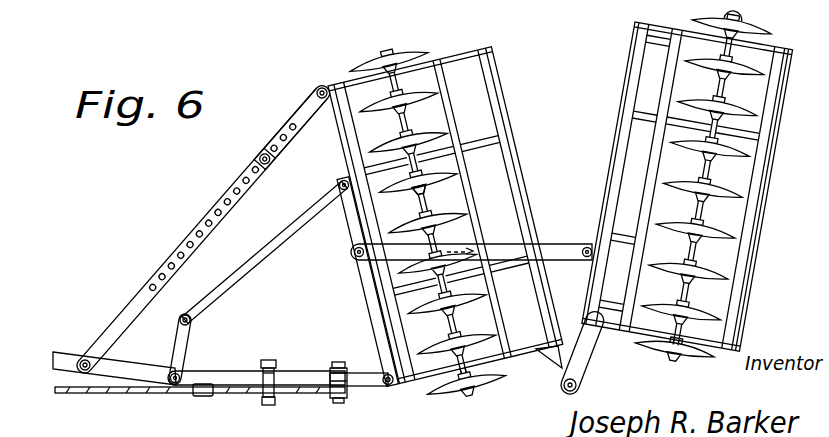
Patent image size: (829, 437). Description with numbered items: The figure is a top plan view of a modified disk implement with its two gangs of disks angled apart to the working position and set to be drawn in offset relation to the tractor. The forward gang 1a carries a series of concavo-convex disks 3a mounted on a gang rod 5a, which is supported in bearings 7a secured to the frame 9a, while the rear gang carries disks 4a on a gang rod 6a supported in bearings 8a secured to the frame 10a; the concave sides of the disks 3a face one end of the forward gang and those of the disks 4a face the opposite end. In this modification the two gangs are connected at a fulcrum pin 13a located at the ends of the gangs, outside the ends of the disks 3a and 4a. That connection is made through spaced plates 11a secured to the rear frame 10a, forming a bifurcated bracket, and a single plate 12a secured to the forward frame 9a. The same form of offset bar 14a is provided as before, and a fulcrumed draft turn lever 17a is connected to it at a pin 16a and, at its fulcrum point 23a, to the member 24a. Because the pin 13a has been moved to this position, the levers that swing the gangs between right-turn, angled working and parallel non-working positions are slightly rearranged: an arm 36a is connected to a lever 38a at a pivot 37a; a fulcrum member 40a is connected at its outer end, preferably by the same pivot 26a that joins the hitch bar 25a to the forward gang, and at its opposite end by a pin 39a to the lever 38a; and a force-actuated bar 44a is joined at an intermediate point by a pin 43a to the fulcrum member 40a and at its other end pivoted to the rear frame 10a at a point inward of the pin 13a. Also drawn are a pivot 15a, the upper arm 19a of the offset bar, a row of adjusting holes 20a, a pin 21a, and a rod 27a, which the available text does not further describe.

The forward gang of disks 1a is at (465, 50).
The disks 3a is at (410, 48).
The disks 4a is at (762, 30).
The gang rod 5a is at (407, 127).
The gang rod 6a is at (727, 88).
The bearings 7a is at (413, 157).
The bearings 8a is at (773, 133).
The frame 9a is at (487, 78).
The frame 10a is at (764, 174).
The spaced plates 11a is at (591, 362).
The single plate 12a is at (552, 360).
The fulcrum pin 13a is at (582, 390).
The offset bar 14a is at (220, 193).
The pivot 15a is at (320, 88).
The pin 16a is at (87, 360).
The draft turn lever 17a is at (135, 368).
The link arm 19a is at (302, 117).
The adjusting holes 20a is at (293, 134).
The pin 21a is at (260, 157).
The fulcrum point 23a is at (177, 387).
The member 24a is at (233, 378).
The hitch bar 25a is at (367, 388).
The pivot 26a is at (390, 388).
The rod 27a is at (304, 397).
The arm 36a is at (191, 345).
The pivot 37a is at (185, 314).
The lever 38a is at (274, 239).
The pin 39a is at (340, 179).
The fulcrum member 40a is at (368, 312).
The pin 43a is at (353, 255).
The force-actuated bar 44a is at (551, 244).